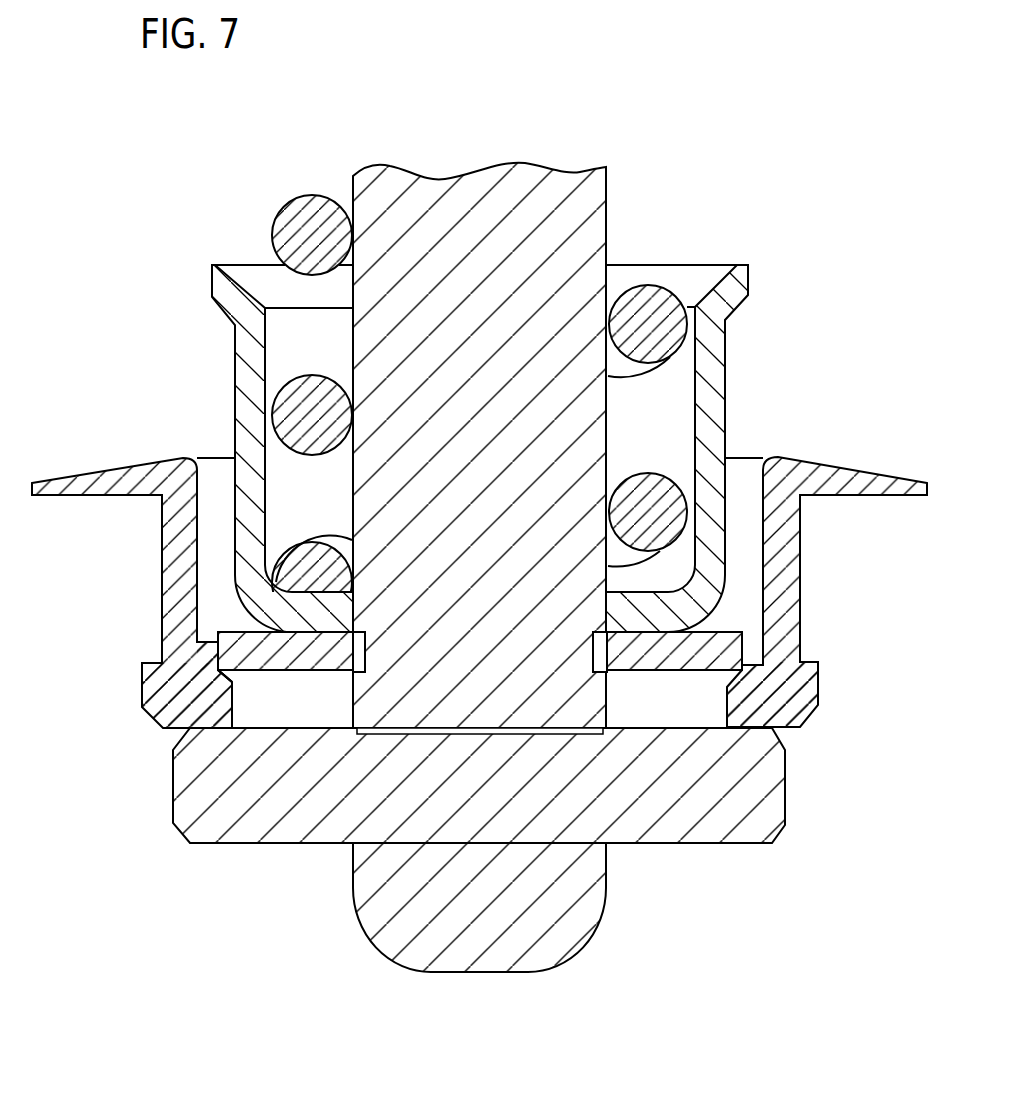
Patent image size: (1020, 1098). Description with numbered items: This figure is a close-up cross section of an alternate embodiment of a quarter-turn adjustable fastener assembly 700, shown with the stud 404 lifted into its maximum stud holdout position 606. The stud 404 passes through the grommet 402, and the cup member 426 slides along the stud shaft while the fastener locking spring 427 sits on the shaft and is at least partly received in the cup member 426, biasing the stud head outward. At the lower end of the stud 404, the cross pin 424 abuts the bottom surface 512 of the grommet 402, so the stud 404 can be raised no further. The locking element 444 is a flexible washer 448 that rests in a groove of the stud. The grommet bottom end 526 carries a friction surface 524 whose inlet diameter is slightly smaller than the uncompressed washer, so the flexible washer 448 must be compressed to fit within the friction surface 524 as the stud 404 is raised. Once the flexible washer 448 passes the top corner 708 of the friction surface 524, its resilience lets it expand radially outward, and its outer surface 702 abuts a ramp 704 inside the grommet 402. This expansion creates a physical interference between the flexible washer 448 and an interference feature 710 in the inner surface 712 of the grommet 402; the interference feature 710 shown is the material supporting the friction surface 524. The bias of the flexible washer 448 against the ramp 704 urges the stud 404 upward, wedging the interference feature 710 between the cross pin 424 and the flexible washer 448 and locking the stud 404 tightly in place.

The fastener assembly 700 is at (705, 106).
The grommet 402 is at (845, 475).
The stud 404 is at (480, 974).
The cross pin 424 is at (176, 792).
The cup member 426 is at (248, 515).
The fastener locking spring 427 is at (650, 500).
The locking element 444 is at (218, 668).
The flexible washer 448 is at (218, 668).
The bottom surface of the grommet 512 is at (170, 738).
The friction surface 524 is at (727, 696).
The grommet bottom end 526 is at (790, 708).
The maximum stud holdout position 606 is at (364, 934).
The outer surface of the flexible washer 702 is at (201, 652).
The ramp 704 is at (252, 655).
The top corner of the friction surface 708 is at (233, 683).
The interference feature 710 is at (218, 712).
The inner surface of the grommet 712 is at (760, 578).